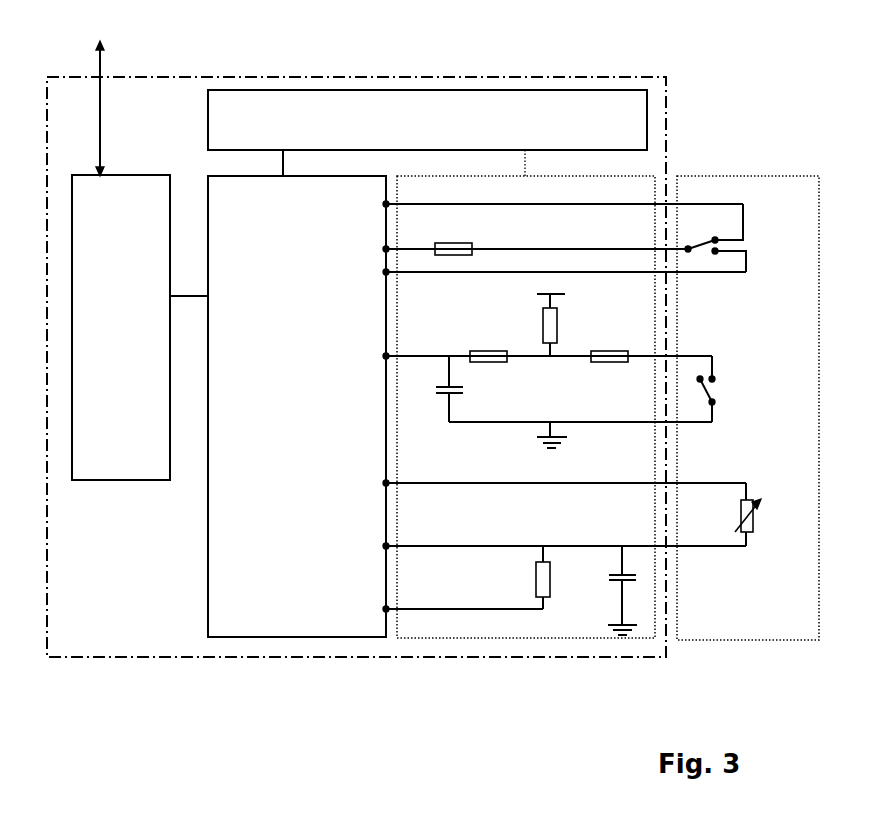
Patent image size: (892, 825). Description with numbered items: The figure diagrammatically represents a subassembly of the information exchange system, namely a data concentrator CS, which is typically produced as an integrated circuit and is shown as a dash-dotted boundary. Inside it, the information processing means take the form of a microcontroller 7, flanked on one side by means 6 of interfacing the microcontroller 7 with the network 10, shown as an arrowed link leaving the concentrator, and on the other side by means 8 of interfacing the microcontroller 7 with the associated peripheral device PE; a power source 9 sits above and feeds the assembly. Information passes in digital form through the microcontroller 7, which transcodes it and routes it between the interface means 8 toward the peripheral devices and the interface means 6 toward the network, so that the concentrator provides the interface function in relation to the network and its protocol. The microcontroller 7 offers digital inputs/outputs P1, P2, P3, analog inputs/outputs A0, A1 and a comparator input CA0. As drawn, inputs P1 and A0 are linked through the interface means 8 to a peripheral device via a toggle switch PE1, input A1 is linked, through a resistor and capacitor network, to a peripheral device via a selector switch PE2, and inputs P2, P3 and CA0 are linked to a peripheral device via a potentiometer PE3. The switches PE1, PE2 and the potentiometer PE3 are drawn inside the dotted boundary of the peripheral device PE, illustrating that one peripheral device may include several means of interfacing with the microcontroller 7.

The network interface means 6 is at (136, 481).
The microcontroller 7 is at (294, 638).
The peripheral interface means 8 is at (462, 639).
The power source 9 is at (650, 137).
The network 10 is at (106, 131).
The data concentrator CS is at (552, 660).
The peripheral device PE is at (721, 642).
The toggle switch PE1 is at (703, 260).
The selector switch PE2 is at (716, 396).
The potentiometer PE3 is at (757, 527).
The digital input/output P1 is at (384, 204).
The analog input/output A0 is at (384, 250).
The analog input/output A1 is at (384, 356).
The digital input/output P2 is at (384, 483).
The comparator input CA0 is at (384, 546).
The digital input/output P3 is at (384, 609).